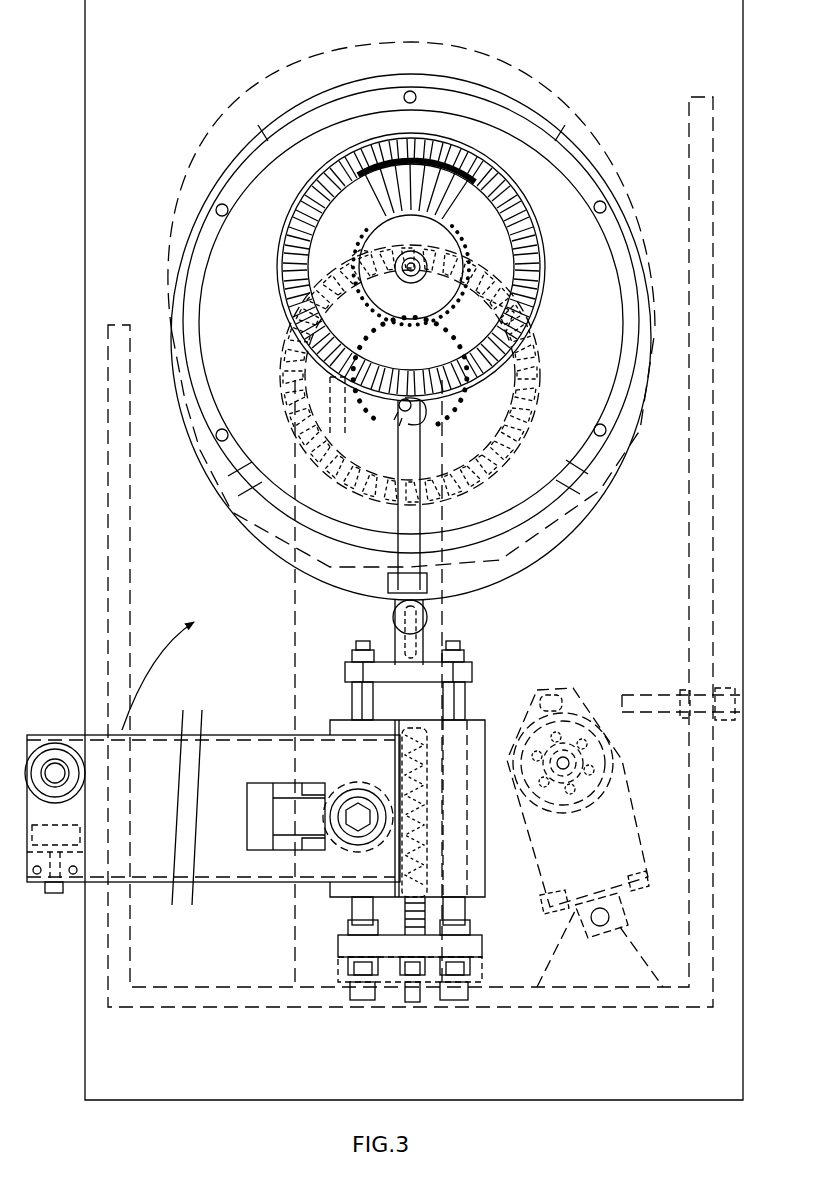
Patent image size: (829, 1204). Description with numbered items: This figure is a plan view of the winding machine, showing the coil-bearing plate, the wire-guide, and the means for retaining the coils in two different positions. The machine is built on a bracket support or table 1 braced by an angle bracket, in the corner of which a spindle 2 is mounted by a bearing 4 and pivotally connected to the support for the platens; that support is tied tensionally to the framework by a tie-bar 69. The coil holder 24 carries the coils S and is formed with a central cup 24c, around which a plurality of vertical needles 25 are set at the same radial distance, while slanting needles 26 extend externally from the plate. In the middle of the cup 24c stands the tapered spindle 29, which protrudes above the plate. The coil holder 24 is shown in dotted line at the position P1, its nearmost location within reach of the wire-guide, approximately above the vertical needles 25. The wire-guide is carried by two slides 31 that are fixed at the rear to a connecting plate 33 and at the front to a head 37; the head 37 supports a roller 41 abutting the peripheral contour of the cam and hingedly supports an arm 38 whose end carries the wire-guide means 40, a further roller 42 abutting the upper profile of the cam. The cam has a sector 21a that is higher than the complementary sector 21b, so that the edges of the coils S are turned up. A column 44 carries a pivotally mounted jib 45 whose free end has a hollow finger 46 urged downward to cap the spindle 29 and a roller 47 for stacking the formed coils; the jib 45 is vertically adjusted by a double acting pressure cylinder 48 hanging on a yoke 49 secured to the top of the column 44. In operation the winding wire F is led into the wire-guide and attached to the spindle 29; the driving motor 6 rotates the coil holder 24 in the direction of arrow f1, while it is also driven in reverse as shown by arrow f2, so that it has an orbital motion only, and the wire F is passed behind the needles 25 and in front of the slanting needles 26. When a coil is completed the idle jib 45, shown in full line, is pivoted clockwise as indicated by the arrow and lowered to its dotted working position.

The bracket support 1 is at (92, 560).
The spindle 2 is at (610, 917).
The bearing 4 is at (640, 965).
The driving motor 6 is at (620, 756).
The coils S is at (626, 820).
The sector of the cam 21a is at (556, 548).
The complementary sector of the cam 21b is at (634, 243).
The coil holder 24 is at (284, 244).
The cup 24c is at (440, 240).
The needles 25 is at (352, 270).
The slanting needles 26 is at (508, 282).
The tapered spindle 29 is at (414, 283).
The slides 31 is at (466, 703).
The connecting plate 33 is at (340, 950).
The head 37 is at (462, 672).
The arm 38 is at (412, 524).
The wire-guide means 40 is at (396, 422).
The roller 41 is at (432, 618).
The roller 42 is at (394, 580).
The column 44 is at (350, 833).
The jib 45 is at (250, 757).
The hollow finger 46 is at (56, 762).
The roller 47 is at (82, 830).
The double acting pressure cylinder 48 is at (378, 797).
The yoke 49 is at (345, 805).
The tie-bar 69 is at (633, 693).
The winding wire F is at (376, 194).
The arrow f1 is at (238, 274).
The arrow f2 is at (500, 372).
The position of the coil holder P1 is at (550, 400).